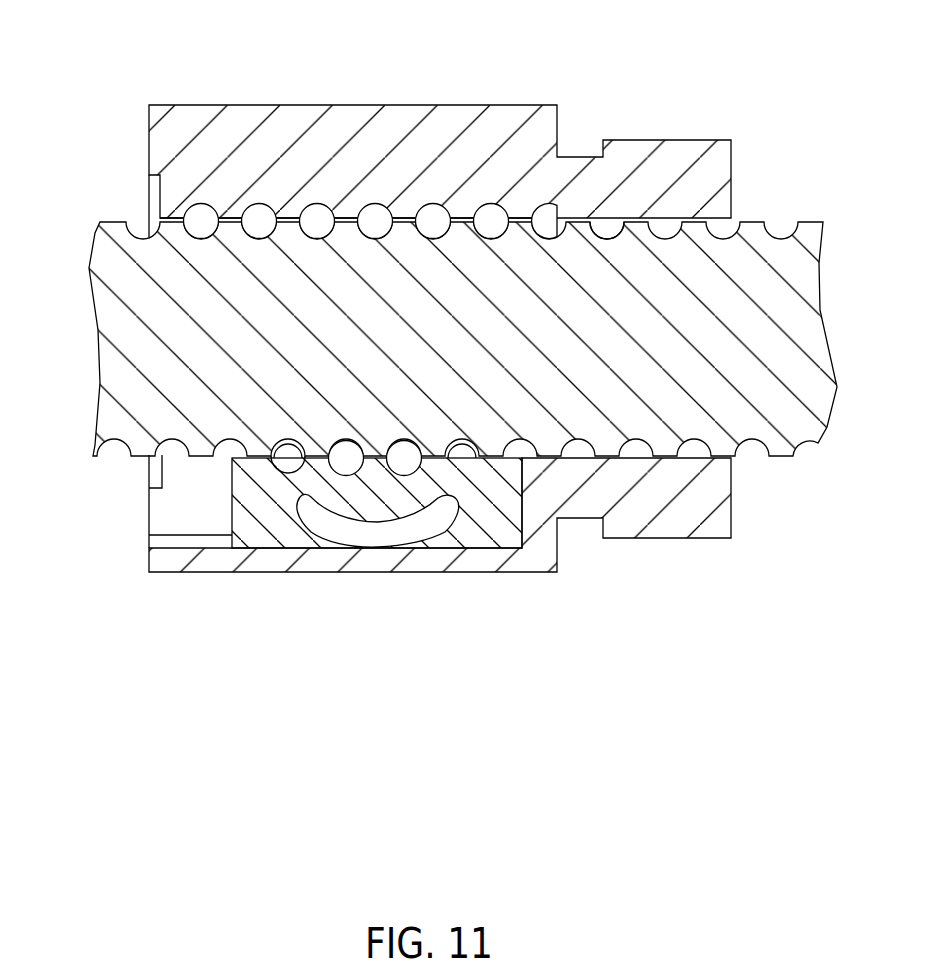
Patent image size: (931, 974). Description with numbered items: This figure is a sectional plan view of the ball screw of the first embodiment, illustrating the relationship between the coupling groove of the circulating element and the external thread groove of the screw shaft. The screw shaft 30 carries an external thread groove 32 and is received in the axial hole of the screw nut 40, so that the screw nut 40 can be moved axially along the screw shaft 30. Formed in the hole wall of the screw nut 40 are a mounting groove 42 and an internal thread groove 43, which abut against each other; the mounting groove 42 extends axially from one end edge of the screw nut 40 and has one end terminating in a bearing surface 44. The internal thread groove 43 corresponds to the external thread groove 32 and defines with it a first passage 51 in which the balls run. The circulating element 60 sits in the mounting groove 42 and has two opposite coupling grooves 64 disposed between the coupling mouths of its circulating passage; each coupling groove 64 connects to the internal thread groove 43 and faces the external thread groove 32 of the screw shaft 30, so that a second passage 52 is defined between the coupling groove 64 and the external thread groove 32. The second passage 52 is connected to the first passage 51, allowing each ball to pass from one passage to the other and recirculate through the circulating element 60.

The screw shaft 30 is at (125, 340).
The external thread groove 32 is at (421, 229).
The screw nut 40 is at (201, 118).
The mounting groove 42 is at (188, 507).
The internal thread groove 43 is at (373, 220).
The bearing surface 44 is at (523, 507).
The first passage 51 is at (392, 243).
The second passage 52 is at (347, 462).
The circulating element 60 is at (250, 513).
The coupling groove 64 is at (363, 462).